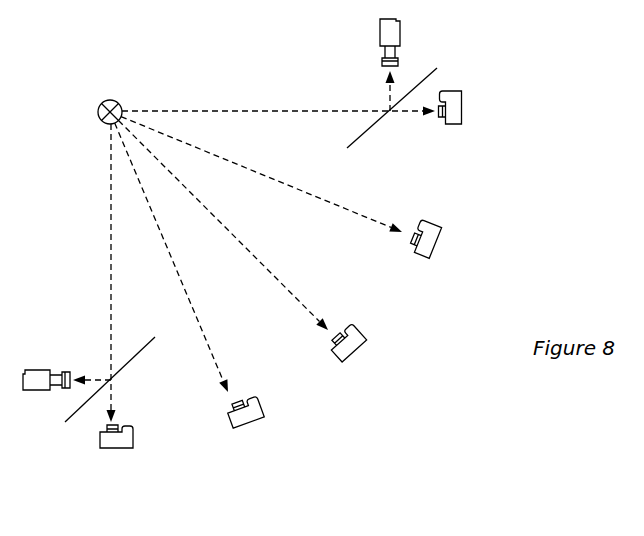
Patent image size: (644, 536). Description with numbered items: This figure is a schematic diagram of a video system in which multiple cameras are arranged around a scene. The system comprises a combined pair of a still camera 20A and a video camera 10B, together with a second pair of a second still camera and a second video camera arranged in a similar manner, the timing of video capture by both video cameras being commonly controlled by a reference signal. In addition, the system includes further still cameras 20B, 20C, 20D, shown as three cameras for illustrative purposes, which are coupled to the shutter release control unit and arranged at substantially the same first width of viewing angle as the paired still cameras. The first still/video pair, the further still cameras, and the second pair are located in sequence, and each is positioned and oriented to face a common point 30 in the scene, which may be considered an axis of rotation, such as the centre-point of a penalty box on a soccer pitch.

The common point 30 is at (94, 102).
The video camera 10B is at (45, 355).
The still camera 20A is at (120, 461).
The further still camera 20B is at (263, 428).
The further still camera 20C is at (372, 353).
The further still camera 20D is at (456, 242).